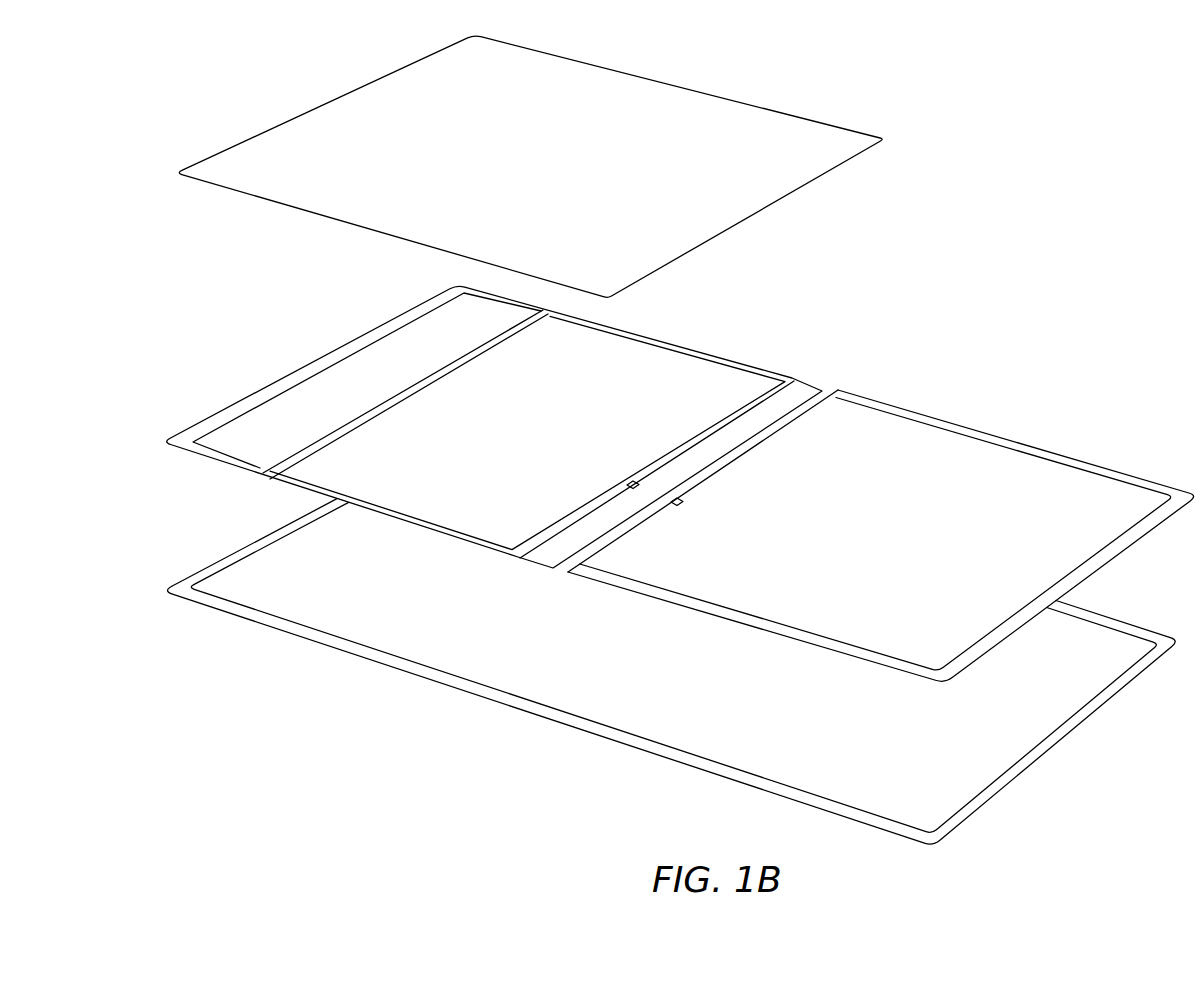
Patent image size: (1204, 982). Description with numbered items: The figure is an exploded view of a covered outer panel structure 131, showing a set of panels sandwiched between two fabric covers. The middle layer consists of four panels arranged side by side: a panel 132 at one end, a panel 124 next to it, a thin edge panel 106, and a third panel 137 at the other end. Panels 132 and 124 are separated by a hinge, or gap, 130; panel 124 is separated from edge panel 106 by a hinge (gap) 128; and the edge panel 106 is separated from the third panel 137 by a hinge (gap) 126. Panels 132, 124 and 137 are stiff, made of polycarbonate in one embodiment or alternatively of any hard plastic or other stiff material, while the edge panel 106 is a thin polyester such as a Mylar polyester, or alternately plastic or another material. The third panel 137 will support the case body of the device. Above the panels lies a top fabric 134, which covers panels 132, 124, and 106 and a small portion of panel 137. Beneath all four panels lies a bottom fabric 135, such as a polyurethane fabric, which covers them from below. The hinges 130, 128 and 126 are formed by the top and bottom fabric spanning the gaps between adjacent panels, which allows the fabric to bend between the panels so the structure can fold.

The covered outer panel structure 131 is at (257, 95).
The top fabric 134 is at (785, 135).
The panel 124 is at (685, 372).
The edge panel 106 is at (792, 405).
The panel 132 is at (275, 415).
The third panel 137 is at (1057, 480).
The hinge (gap) 130 is at (252, 476).
The hinge (gap) 128 is at (503, 560).
The hinge (gap) 126 is at (568, 580).
The fabric 135 is at (1033, 703).